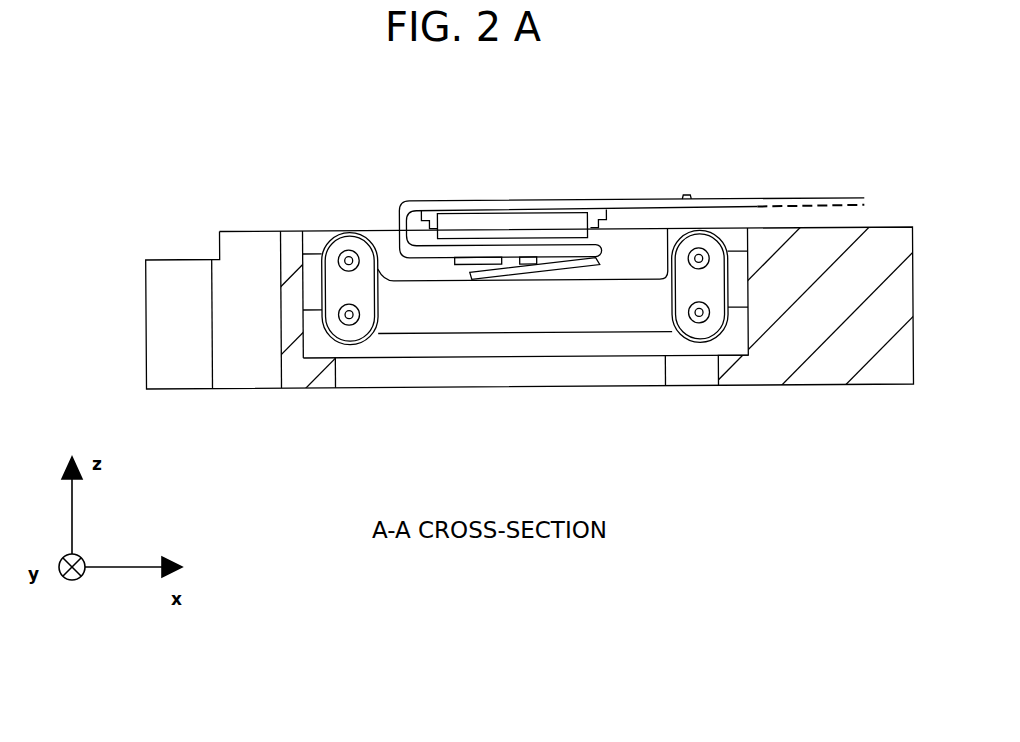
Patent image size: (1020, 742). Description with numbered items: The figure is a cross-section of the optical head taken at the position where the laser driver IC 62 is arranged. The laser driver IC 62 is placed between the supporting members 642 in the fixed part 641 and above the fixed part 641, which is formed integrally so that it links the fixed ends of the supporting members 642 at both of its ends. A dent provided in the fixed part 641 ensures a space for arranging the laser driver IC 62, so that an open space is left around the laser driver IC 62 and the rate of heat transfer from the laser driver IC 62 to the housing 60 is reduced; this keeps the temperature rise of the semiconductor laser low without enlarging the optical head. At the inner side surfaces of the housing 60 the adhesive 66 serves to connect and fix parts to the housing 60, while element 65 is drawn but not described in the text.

The housing 60 is at (230, 237).
The adhesive 66 is at (313, 267).
The supporting members 642 is at (349, 250).
The laser driver IC 62 is at (510, 230).
The fixed part 641 is at (417, 330).
The flexible printed circuit board 65 is at (728, 200).